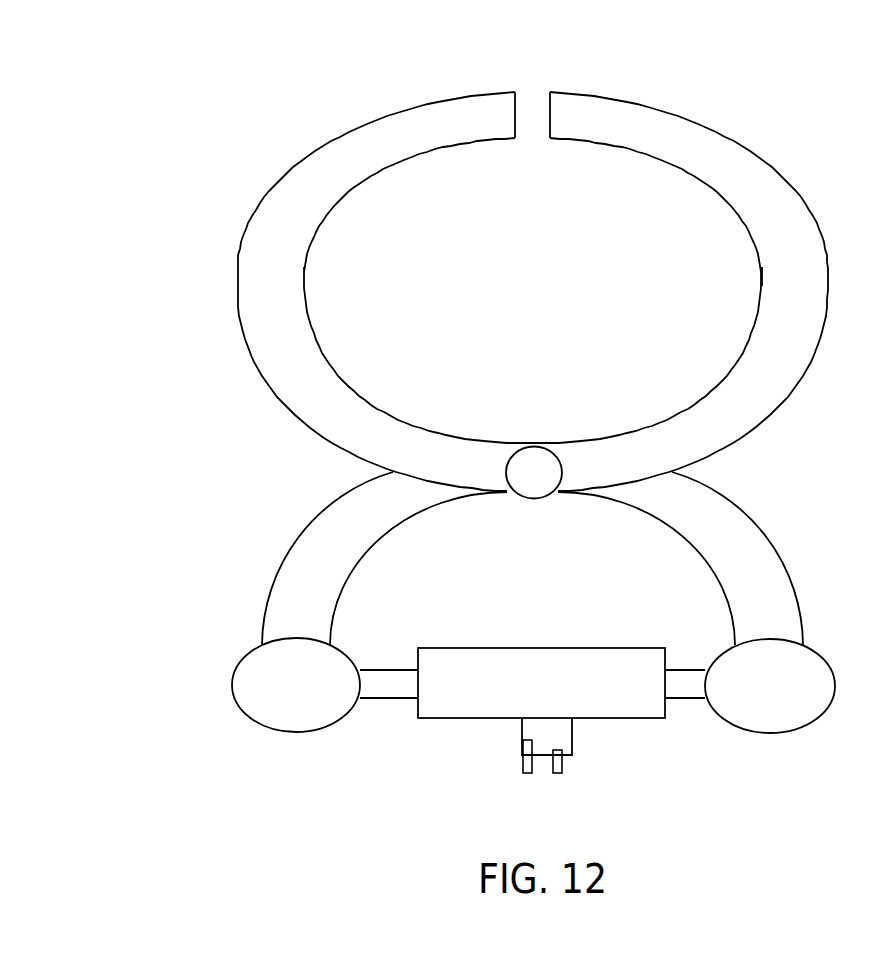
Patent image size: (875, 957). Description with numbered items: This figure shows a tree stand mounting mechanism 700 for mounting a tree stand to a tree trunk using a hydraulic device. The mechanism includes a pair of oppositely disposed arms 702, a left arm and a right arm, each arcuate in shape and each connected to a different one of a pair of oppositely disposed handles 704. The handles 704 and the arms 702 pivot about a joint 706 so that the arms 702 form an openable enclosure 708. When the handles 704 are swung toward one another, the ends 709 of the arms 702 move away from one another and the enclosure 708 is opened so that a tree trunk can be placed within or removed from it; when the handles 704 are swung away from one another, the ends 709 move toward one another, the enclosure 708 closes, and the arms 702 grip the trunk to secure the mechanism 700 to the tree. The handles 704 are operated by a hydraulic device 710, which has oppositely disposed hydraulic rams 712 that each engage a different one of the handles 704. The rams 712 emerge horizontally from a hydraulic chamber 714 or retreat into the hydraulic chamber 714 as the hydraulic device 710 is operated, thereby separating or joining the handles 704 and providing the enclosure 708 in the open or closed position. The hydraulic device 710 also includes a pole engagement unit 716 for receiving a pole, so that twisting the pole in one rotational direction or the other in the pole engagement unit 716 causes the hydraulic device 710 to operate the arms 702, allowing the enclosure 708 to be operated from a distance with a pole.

The tree stand mounting mechanism 700 is at (181, 233).
The pair of oppositely disposed arms 702 is at (292, 182).
The oppositely disposed handles 704 is at (305, 555).
The joint 706 is at (532, 457).
The enclosure 708 is at (430, 205).
The ends of the arms 709 is at (495, 102).
The hydraulic device 710 is at (613, 762).
The hydraulic rams 712 is at (390, 678).
The hydraulic chamber 714 is at (551, 663).
The pole engagement unit 716 is at (520, 740).